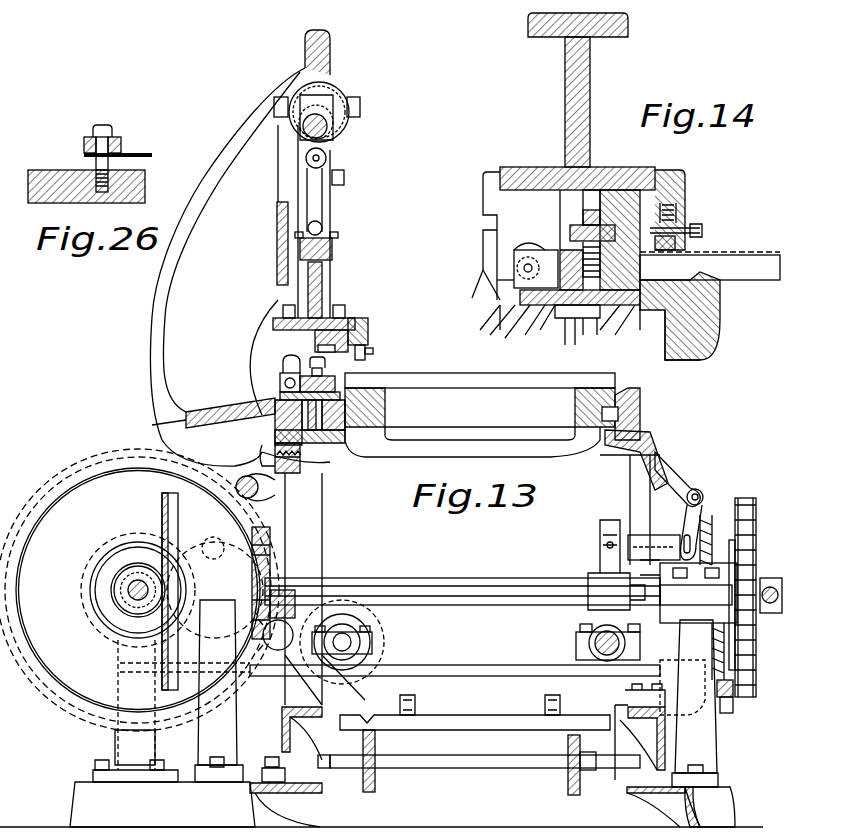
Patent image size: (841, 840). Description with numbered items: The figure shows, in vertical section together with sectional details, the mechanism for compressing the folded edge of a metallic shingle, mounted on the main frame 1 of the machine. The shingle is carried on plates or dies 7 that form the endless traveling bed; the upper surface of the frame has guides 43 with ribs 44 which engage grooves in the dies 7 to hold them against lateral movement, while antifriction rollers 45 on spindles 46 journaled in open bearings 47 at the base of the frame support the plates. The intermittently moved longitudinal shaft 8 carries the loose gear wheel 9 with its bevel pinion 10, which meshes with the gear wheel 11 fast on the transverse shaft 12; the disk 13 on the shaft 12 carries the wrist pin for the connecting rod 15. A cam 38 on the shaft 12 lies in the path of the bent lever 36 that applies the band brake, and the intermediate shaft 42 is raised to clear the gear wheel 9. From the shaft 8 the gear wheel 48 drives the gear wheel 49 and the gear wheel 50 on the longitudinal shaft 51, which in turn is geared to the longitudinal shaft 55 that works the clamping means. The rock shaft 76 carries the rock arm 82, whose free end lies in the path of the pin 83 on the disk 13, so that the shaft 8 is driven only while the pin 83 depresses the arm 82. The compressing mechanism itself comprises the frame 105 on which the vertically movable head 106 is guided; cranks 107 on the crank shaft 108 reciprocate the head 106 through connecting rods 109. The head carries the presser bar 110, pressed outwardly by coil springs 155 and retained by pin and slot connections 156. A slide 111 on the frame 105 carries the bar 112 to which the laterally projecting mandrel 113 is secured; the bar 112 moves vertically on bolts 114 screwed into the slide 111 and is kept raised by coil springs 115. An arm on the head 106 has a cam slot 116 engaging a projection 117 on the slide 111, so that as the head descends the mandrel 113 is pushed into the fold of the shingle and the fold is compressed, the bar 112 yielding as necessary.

In FIG. 13, the main frame 1 is at (575, 445).
In FIG. 14, the plates or dies 7 is at (757, 280).
In FIG. 13, the plates or dies 7 is at (478, 372).
In FIG. 13, the longitudinal shaft 8 is at (128, 592).
In FIG. 13, the loose gear wheel 9 is at (78, 470).
In FIG. 13, the bevel pinion 10 is at (122, 562).
In FIG. 13, the gear wheel 11 is at (163, 500).
In FIG. 13, the transverse shaft 12 is at (502, 577).
In FIG. 13, the disk 13 is at (748, 497).
In FIG. 13, the connecting rod 15 is at (770, 605).
In FIG. 13, the bent lever 36 is at (285, 650).
In FIG. 13, the cam 38 is at (272, 540).
In FIG. 13, the intermediate shaft 42 is at (270, 493).
In FIG. 14, the guides 43 is at (700, 362).
In FIG. 13, the guides 43 is at (678, 408).
In FIG. 14, the ribs 44 is at (710, 298).
In FIG. 13, the ribs 44 is at (612, 385).
In FIG. 13, the antifriction rollers 45 is at (575, 795).
In FIG. 13, the spindles 46 is at (470, 770).
In FIG. 13, the open bearings 47 is at (335, 770).
In FIG. 13, the gear wheel 48 is at (100, 625).
In FIG. 13, the gear wheel 49 is at (286, 592).
In FIG. 13, the gear wheel 50 is at (385, 612).
In FIG. 13, the longitudinal shaft 51 is at (360, 642).
In FIG. 13, the longitudinal shaft 55 is at (575, 640).
In FIG. 13, the rock shaft 76 is at (480, 663).
In FIG. 13, the rock arm 82 is at (727, 713).
In FIG. 13, the pin 83 is at (735, 700).
In FIG. 13, the frame 105 is at (250, 150).
In FIG. 14, the vertically movable head 106 is at (563, 85).
In FIG. 13, the vertically movable head 106 is at (335, 202).
In FIG. 13, the cranks 107 is at (332, 94).
In FIG. 13, the crank shaft 108 is at (326, 140).
In FIG. 13, the connecting rods 109 is at (318, 212).
In FIG. 14, the presser bar 110 is at (676, 244).
In FIG. 13, the presser bar 110 is at (366, 350).
In FIG. 26, the slide 111 is at (145, 188).
In FIG. 14, the slide 111 is at (555, 306).
In FIG. 13, the slide 111 is at (370, 412).
In FIG. 26, the bar 112 is at (84, 146).
In FIG. 14, the bar 112 is at (572, 226).
In FIG. 13, the bar 112 is at (298, 372).
In FIG. 26, the mandrel 113 is at (152, 155).
In FIG. 14, the mandrel 113 is at (625, 305).
In FIG. 13, the mandrel 113 is at (340, 394).
In FIG. 26, the bolts 114 is at (95, 126).
In FIG. 13, the bolts 114 is at (315, 360).
In FIG. 14, the coil springs 115 is at (540, 258).
In FIG. 14, the cam slot 116 is at (512, 255).
In FIG. 14, the projection 117 is at (512, 275).
In FIG. 14, the coil springs 155 is at (683, 200).
In FIG. 14, the pin and slot connections 156 is at (690, 222).